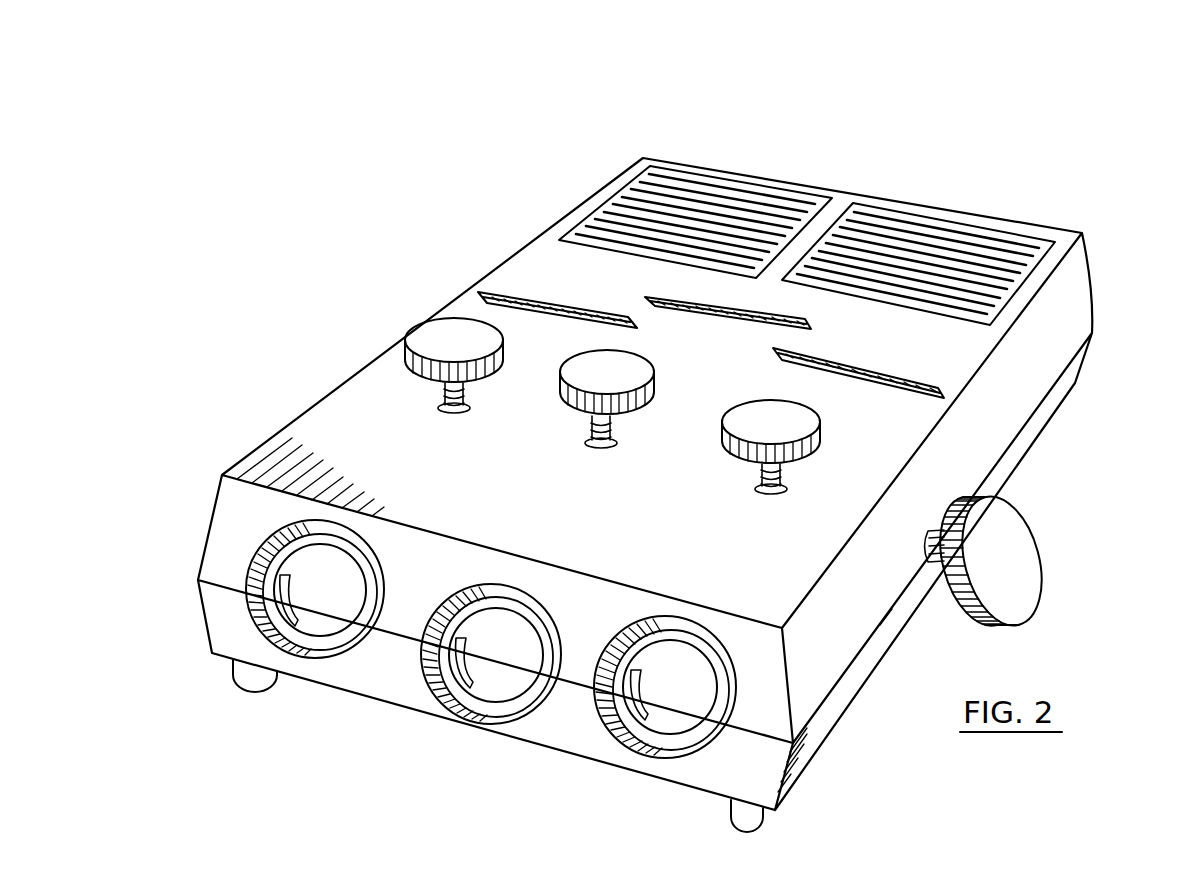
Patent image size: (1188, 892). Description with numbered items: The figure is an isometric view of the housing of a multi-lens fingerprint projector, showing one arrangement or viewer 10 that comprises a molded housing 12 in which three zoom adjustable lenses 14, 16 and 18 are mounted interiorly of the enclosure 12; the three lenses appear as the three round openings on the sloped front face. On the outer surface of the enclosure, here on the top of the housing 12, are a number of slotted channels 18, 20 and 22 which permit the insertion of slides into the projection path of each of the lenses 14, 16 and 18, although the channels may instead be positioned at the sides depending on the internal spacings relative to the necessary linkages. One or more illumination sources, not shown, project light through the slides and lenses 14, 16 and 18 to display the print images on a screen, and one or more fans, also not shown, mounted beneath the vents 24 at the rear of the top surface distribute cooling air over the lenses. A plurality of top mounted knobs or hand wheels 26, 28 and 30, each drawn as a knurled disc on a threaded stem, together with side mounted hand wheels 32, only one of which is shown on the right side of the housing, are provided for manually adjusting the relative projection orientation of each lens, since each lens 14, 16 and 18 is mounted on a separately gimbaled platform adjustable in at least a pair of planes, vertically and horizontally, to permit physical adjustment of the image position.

The viewer 10 is at (1058, 118).
The molded housing 12 is at (1075, 292).
The zoom adjustable lens 14 is at (310, 623).
The zoom adjustable lens 16 is at (487, 680).
The zoom adjustable lens and slotted channel 18 is at (520, 293).
The slotted channel 20 is at (660, 292).
The slotted channel 22 is at (913, 375).
The vents 24 is at (877, 220).
The top mounted knob or hand wheel 26 is at (423, 331).
The top mounted knob or hand wheel 28 is at (566, 406).
The top mounted knob or hand wheel 30 is at (805, 423).
The side mounted hand wheel 32 is at (1023, 575).